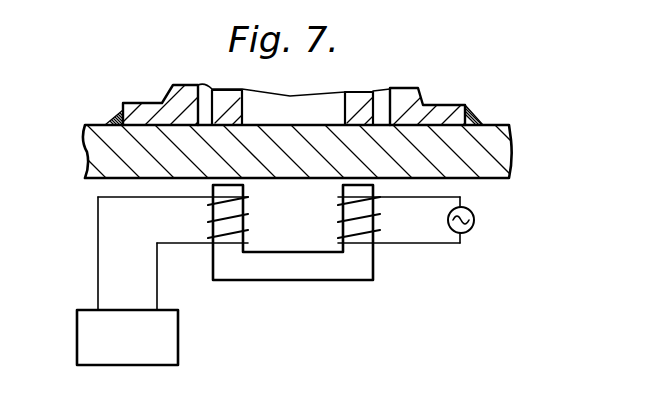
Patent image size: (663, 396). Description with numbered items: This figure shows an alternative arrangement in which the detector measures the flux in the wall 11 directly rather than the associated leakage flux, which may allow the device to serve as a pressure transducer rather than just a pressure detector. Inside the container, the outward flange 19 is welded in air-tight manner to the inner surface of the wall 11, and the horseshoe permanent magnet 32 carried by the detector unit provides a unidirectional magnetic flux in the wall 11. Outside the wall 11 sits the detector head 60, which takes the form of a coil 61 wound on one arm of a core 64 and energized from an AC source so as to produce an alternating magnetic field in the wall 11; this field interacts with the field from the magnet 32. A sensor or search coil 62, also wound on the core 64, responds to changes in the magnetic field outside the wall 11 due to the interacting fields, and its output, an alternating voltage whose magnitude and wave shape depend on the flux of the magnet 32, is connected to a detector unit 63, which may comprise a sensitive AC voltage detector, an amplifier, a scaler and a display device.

The wall 11 is at (485, 140).
The outward flange 19 is at (143, 116).
The horseshoe permanent magnet 32 is at (362, 103).
The detector head 60 is at (279, 254).
The coil 61 is at (380, 228).
The sensor coil 62 is at (247, 213).
The detector unit 63 is at (167, 335).
The core 64 is at (300, 263).